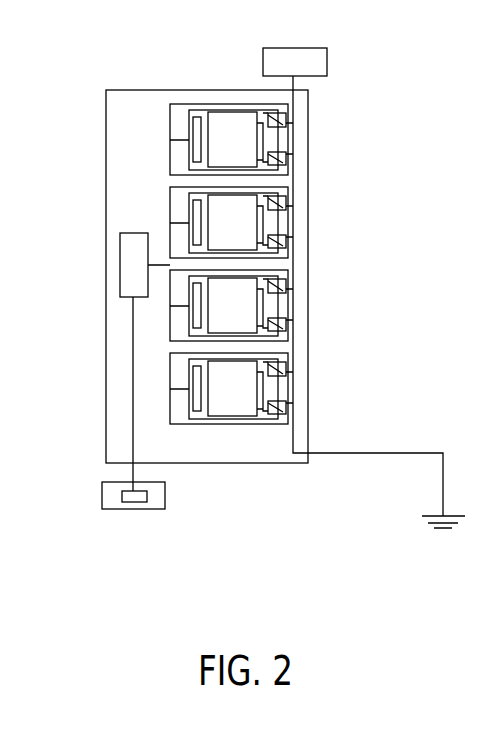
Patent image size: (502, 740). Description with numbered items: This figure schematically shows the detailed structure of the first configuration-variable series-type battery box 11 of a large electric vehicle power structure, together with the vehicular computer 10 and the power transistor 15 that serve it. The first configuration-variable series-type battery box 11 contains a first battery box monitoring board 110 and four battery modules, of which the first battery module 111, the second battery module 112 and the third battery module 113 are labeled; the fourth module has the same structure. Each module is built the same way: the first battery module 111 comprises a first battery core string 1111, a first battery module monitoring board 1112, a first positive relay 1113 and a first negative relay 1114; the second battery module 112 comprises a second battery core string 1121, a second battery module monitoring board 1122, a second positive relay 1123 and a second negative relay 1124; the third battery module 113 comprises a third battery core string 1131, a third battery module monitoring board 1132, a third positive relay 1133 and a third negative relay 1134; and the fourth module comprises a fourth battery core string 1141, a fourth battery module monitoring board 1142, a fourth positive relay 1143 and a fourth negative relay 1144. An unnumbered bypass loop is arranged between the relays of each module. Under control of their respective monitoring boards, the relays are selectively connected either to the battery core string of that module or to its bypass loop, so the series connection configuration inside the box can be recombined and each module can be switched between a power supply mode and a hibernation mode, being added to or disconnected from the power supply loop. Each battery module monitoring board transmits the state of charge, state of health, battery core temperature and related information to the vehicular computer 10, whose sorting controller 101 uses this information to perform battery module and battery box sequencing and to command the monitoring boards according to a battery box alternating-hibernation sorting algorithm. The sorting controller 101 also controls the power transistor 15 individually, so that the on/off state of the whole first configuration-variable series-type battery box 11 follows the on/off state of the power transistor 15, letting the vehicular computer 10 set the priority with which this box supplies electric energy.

The vehicular computer 10 is at (159, 518).
The sorting controller 101 is at (142, 490).
The first configuration-variable series-type battery box 11 is at (239, 88).
The first battery box monitoring board 110 is at (118, 264).
The first battery module 111 is at (203, 120).
The second battery module 112 is at (203, 196).
The third battery module 113 is at (204, 311).
The first battery core string 1111 is at (201, 112).
The first battery module monitoring board 1112 is at (191, 134).
The first positive relay 1113 is at (287, 123).
The first negative relay 1114 is at (287, 152).
The second battery core string 1121 is at (201, 195).
The second battery module monitoring board 1122 is at (191, 217).
The second positive relay 1123 is at (287, 204).
The second negative relay 1124 is at (287, 242).
The third battery core string 1131 is at (201, 323).
The third battery module monitoring board 1132 is at (191, 292).
The third positive relay 1133 is at (287, 290).
The third negative relay 1134 is at (287, 320).
The fourth battery core string 1141 is at (201, 410).
The fourth battery module monitoring board 1142 is at (191, 383).
The fourth positive relay 1143 is at (287, 371).
The fourth negative relay 1144 is at (287, 408).
The power transistor 15 is at (299, 46).